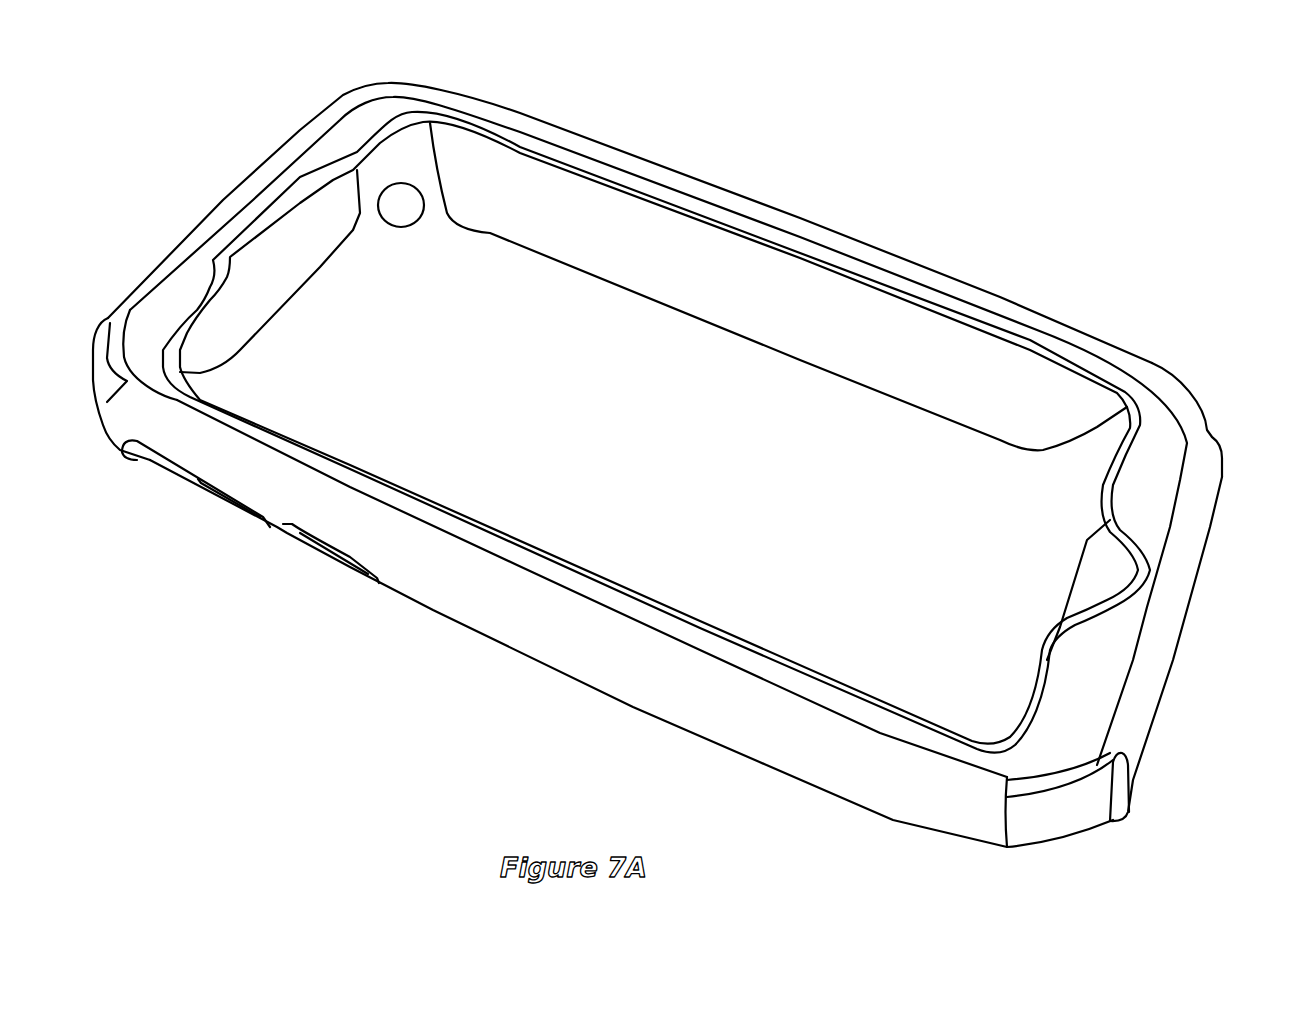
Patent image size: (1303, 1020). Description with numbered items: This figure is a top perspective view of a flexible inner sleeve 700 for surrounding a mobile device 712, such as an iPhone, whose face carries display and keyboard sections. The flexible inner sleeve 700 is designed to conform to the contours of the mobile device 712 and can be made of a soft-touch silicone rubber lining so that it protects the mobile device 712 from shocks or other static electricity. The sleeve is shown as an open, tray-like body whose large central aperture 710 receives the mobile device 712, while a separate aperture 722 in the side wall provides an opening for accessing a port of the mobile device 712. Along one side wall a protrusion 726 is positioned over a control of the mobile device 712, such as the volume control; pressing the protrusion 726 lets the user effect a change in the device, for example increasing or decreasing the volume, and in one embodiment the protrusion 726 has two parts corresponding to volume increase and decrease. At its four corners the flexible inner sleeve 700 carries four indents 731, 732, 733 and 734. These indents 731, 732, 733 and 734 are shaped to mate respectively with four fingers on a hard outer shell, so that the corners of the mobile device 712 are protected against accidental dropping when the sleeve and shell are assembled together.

The flexible inner sleeve 700 is at (670, 469).
The aperture 710 is at (720, 597).
The mobile device 712 is at (853, 273).
The aperture 722 is at (1181, 617).
The protrusion 726 is at (223, 510).
The indent 731 is at (103, 377).
The indent 732 is at (377, 84).
The indent 733 is at (1060, 838).
The indent 734 is at (1192, 392).